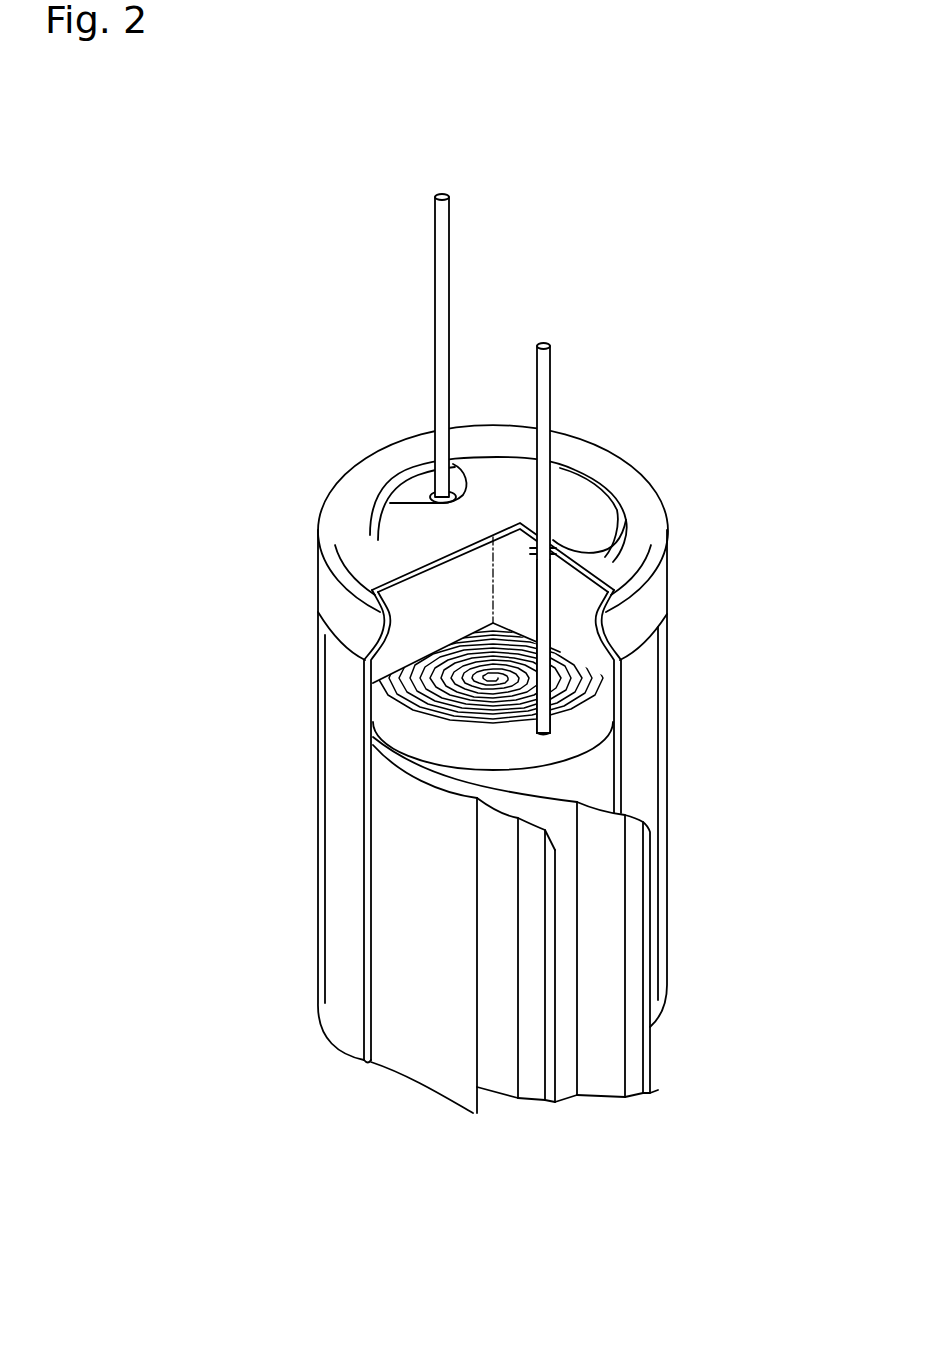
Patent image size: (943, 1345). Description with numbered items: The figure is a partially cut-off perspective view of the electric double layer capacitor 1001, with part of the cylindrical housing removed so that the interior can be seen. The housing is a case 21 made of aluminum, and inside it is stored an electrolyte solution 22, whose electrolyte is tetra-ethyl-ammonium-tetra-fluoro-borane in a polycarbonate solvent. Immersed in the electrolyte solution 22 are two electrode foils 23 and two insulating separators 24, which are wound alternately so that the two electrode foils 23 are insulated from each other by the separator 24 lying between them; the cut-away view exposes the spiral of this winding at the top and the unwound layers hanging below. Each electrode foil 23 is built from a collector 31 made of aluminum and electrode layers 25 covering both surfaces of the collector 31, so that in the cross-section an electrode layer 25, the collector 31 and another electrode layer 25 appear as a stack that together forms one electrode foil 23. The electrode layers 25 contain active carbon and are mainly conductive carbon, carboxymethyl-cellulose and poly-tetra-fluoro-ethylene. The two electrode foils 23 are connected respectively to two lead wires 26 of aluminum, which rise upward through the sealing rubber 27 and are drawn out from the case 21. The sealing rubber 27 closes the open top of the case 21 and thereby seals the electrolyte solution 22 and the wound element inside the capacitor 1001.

The electric double layer capacitor 1001 is at (517, 719).
The case 21 is at (667, 633).
The electrolyte solution 22 is at (560, 652).
The electrode foil 23 is at (575, 1186).
The separator 24 is at (393, 993).
The electrode layer 25 is at (498, 1073).
The lead wire 26 is at (450, 362).
The sealing rubber 27 is at (597, 509).
The collector 31 is at (532, 1082).